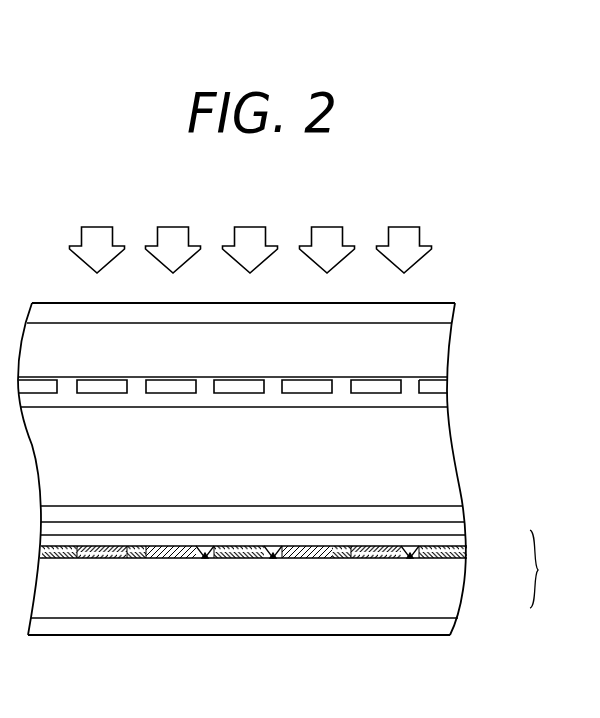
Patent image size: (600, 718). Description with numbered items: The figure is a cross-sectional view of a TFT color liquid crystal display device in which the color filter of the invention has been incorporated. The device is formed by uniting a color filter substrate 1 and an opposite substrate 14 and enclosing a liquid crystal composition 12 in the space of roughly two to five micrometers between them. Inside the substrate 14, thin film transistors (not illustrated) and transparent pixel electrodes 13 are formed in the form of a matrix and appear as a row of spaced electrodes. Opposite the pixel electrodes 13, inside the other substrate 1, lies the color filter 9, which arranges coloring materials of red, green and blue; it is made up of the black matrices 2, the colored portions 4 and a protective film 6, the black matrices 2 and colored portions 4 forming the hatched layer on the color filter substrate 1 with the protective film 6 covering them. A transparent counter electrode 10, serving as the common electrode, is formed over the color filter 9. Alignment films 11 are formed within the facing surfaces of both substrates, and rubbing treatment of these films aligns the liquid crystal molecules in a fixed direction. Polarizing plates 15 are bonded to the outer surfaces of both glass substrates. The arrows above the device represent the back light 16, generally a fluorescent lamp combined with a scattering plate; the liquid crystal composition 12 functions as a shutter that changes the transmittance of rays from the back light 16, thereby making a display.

The color filter substrate 1 is at (452, 598).
The black matrices 2 is at (415, 553).
The colored portions 4 is at (110, 558).
The protective film 6 is at (457, 540).
The color filter 9 is at (546, 569).
The transparent counter electrode 10 is at (457, 530).
The alignment films 11 is at (438, 402).
The liquid crystal composition 12 is at (447, 438).
The transparent pixel electrodes 13 is at (440, 385).
The substrate 14 is at (438, 350).
The polarizing plates 15 is at (443, 315).
The back light 16 is at (424, 261).